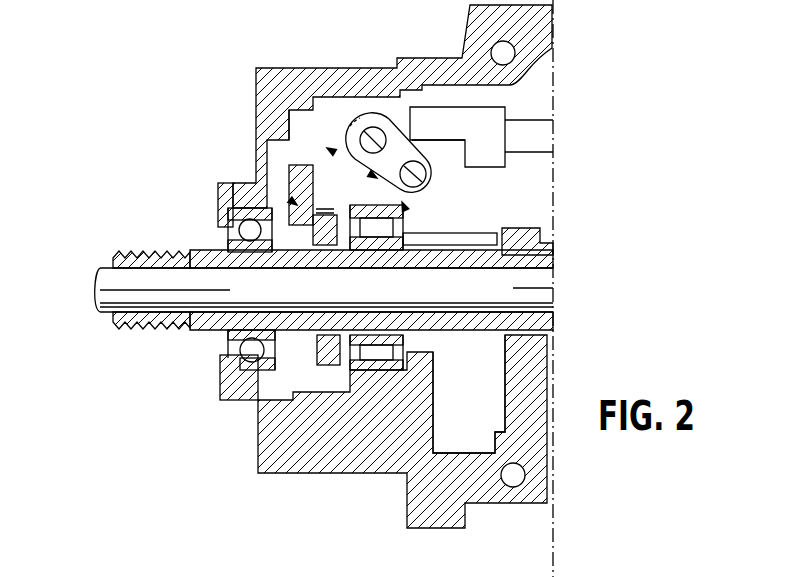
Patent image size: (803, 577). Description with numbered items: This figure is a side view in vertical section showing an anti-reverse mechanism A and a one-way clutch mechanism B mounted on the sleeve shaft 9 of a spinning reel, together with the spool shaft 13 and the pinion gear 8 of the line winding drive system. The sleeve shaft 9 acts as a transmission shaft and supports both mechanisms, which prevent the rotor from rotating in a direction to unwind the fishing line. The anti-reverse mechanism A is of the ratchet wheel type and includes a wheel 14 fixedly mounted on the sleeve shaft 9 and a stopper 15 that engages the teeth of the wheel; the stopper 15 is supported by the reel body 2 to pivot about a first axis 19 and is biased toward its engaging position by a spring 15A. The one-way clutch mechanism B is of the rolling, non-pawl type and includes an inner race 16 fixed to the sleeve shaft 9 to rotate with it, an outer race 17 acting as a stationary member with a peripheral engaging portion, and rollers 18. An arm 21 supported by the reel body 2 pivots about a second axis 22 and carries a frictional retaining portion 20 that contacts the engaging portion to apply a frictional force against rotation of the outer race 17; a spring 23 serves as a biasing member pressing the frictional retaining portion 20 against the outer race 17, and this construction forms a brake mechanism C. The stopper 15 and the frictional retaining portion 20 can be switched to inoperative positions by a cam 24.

The reel body 2 is at (520, 20).
The pinion gear 8 is at (467, 337).
The sleeve shaft 9 is at (145, 330).
The spool shaft 13 is at (102, 275).
The wheel 14 is at (262, 200).
The stopper 15 is at (335, 180).
The spring 15A is at (345, 128).
The inner race 16 is at (350, 342).
The outer race 17 is at (386, 372).
The rollers 18 is at (355, 350).
The first axis 19 is at (375, 136).
The frictional retaining portion 20 is at (400, 198).
The arm 21 is at (440, 160).
The second axis 22 is at (430, 177).
The spring 23 is at (372, 170).
The cam 24 is at (453, 118).
The anti-reverse mechanism A is at (297, 205).
The one-way clutch mechanism B is at (377, 178).
The brake mechanism C is at (402, 202).